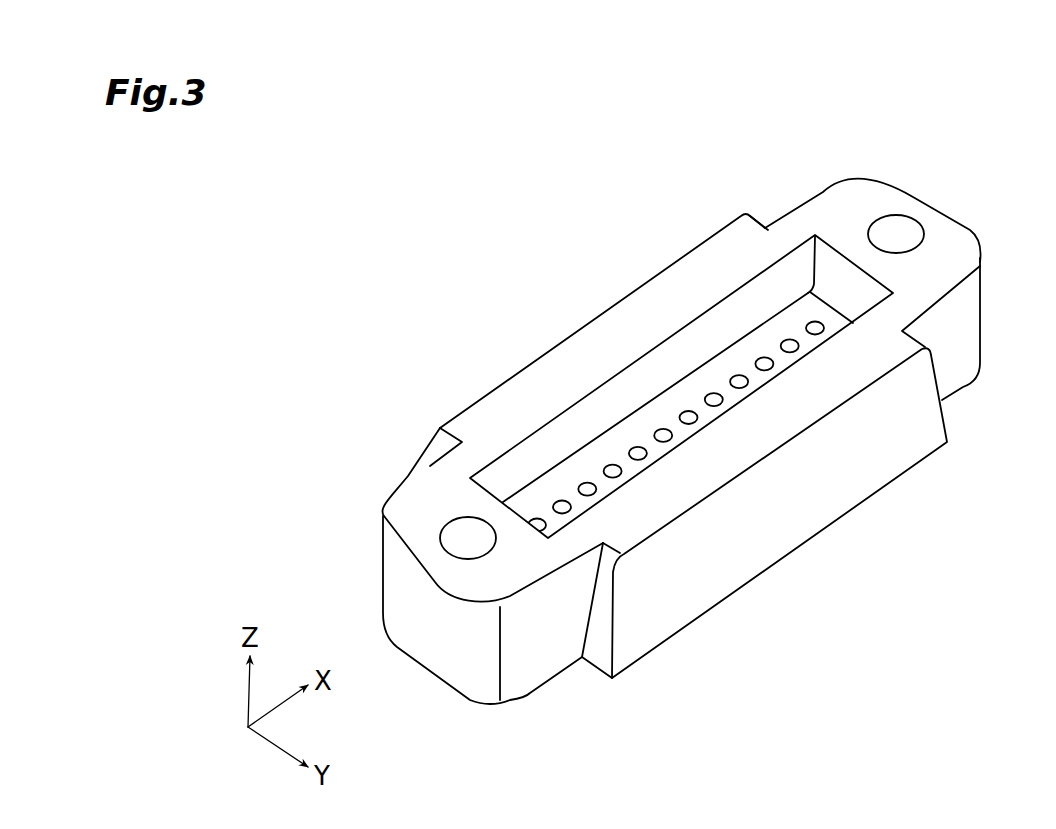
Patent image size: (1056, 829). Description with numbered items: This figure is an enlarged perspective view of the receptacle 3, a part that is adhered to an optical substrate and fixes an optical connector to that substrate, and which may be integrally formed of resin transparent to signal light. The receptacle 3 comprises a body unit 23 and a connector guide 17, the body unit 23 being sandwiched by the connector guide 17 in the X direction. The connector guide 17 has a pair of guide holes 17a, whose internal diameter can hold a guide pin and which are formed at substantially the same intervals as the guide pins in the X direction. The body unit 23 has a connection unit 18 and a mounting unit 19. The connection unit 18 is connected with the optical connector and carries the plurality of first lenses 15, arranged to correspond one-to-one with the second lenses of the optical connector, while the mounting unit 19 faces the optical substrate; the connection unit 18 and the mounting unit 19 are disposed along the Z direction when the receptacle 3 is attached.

The receptacle 3 is at (953, 97).
The first lenses 15 is at (562, 499).
The connector guide 17 is at (400, 479).
The guide holes 17a is at (456, 536).
The connection unit 18 is at (629, 331).
The mounting unit 19 is at (657, 654).
The body unit 23 is at (782, 236).